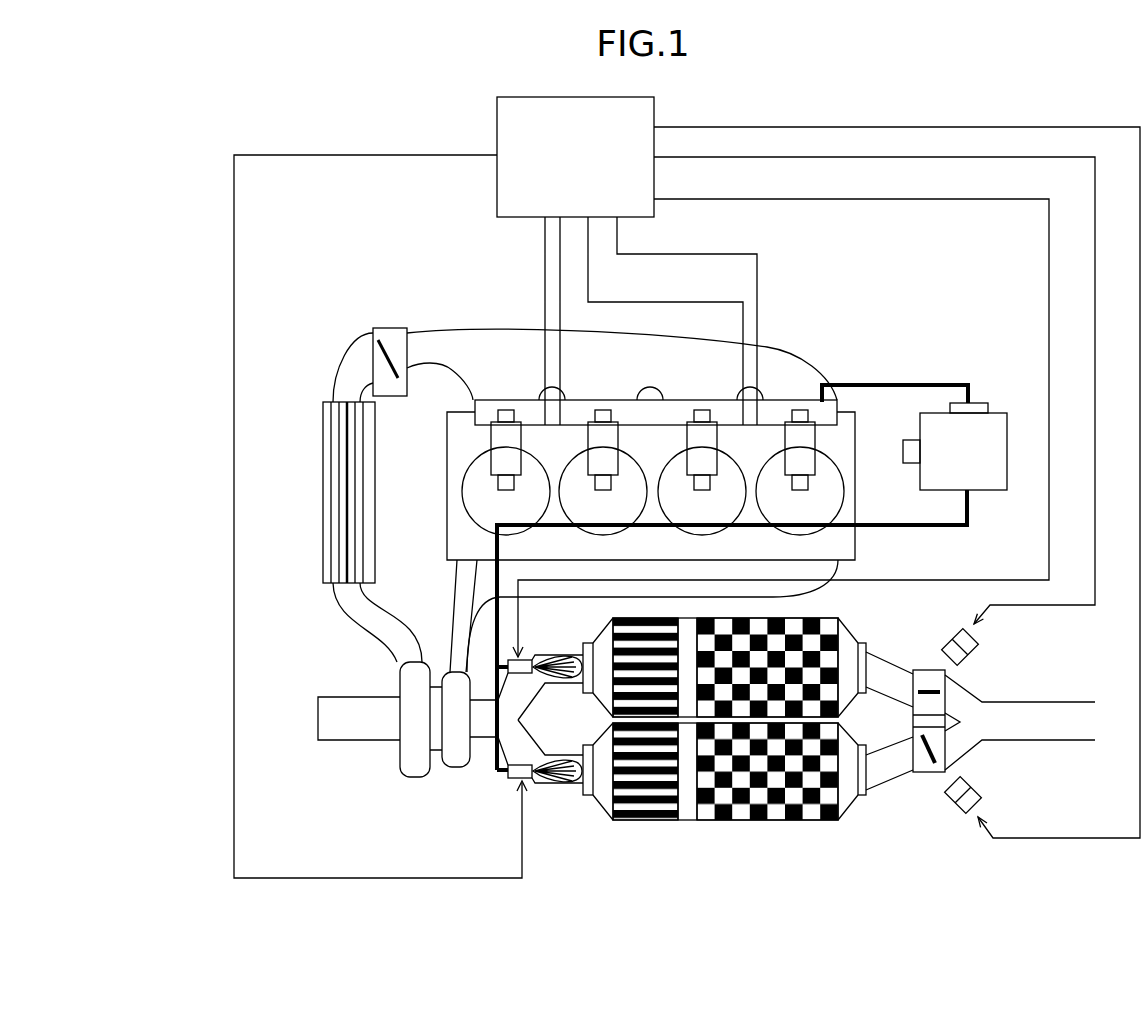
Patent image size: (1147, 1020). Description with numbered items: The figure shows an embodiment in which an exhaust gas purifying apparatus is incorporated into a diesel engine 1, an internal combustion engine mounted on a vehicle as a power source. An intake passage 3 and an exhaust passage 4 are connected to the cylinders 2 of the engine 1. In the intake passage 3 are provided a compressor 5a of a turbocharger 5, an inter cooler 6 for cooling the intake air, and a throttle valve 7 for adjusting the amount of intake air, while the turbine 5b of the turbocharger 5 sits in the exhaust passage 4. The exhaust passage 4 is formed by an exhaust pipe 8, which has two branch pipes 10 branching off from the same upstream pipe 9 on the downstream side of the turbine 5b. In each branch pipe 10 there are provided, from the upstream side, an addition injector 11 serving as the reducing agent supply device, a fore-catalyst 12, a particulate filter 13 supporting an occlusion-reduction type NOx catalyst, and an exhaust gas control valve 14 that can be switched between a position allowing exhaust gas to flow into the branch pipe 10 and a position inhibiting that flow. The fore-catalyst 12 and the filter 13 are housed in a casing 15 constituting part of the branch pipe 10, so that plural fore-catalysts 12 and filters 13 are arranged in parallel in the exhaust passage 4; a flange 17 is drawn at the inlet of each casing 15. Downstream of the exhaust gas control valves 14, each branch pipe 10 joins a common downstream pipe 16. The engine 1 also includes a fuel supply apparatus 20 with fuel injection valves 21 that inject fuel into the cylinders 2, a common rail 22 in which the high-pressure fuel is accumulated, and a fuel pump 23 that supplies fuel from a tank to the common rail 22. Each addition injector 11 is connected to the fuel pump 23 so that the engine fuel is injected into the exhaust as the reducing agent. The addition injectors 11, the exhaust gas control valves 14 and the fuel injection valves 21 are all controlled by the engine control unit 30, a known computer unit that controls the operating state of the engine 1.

The diesel engine 1 is at (200, 170).
The cylinders 2 is at (578, 528).
The intake passage 3 is at (488, 330).
The exhaust passage 4 is at (470, 578).
The turbocharger 5 is at (475, 826).
The compressor 5a is at (415, 778).
The turbine 5b is at (458, 768).
The inter cooler 6 is at (323, 494).
The throttle valve 7 is at (388, 328).
The exhaust pipe 8 is at (456, 609).
The upstream pipe 9 is at (485, 738).
The branch pipes 10 is at (548, 690).
The addition injector 11 is at (533, 657).
The fore-catalyst 12 is at (660, 626).
The particulate filter 13 is at (758, 626).
The exhaust gas control valve 14 is at (930, 670).
The casing 15 is at (826, 620).
The downstream pipe 16 is at (1028, 702).
The flange 17 is at (592, 641).
The fuel supply apparatus 20 is at (905, 290).
The fuel injection valves 21 is at (586, 440).
The common rail 22 is at (777, 402).
The fuel pump 23 is at (988, 405).
The engine control unit 30 is at (496, 118).